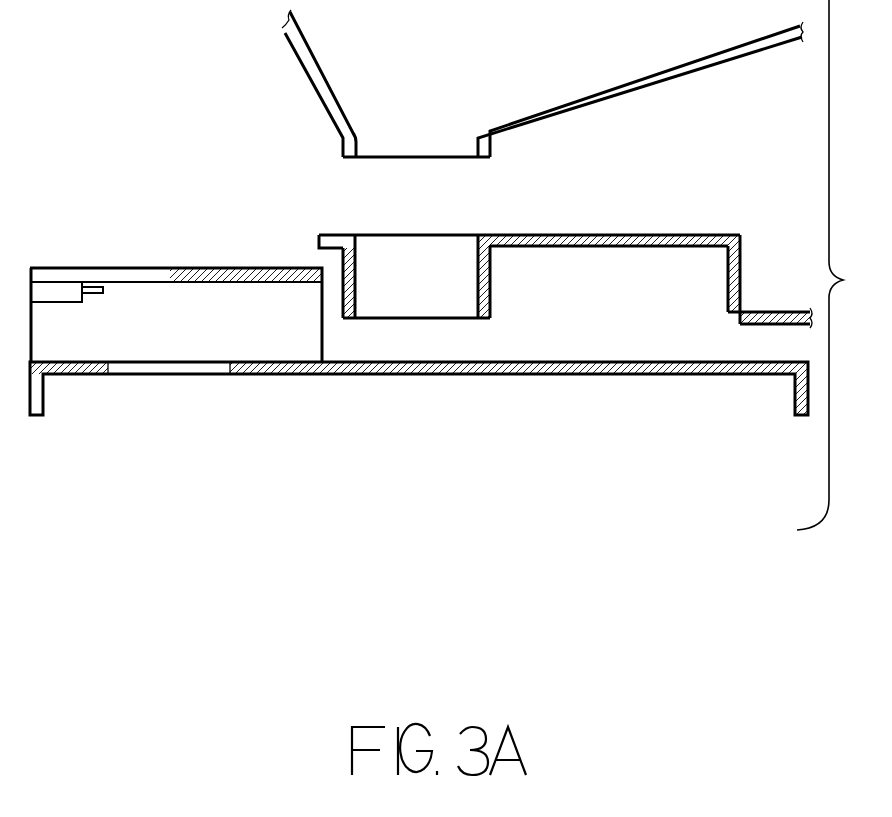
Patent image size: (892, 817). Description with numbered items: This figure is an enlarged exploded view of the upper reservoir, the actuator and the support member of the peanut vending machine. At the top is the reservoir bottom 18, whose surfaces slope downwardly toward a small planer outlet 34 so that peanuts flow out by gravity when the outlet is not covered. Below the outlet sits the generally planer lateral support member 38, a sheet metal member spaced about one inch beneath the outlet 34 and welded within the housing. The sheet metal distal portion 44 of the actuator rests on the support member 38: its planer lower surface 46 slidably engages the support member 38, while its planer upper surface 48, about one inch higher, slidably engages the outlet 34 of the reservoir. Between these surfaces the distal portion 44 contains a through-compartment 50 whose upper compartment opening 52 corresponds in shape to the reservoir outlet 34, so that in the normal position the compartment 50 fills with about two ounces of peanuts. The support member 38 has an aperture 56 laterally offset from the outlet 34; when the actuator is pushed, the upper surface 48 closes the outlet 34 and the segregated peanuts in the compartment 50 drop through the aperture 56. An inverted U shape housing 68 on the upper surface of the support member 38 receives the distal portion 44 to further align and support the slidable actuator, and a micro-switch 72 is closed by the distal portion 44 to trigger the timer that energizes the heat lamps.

The bottom 18 is at (320, 83).
The planer outlet 34 is at (431, 155).
The lateral support member 38 is at (672, 371).
The distal portion 44 is at (647, 284).
The planer lower surface 46 is at (347, 320).
The planer upper surface 48 is at (335, 235).
The through-compartment 50 is at (356, 283).
The upper compartment opening 52 is at (420, 234).
The aperture 56 is at (165, 371).
The inverted U shape housing 68 is at (208, 267).
The micro-switch 72 is at (53, 292).